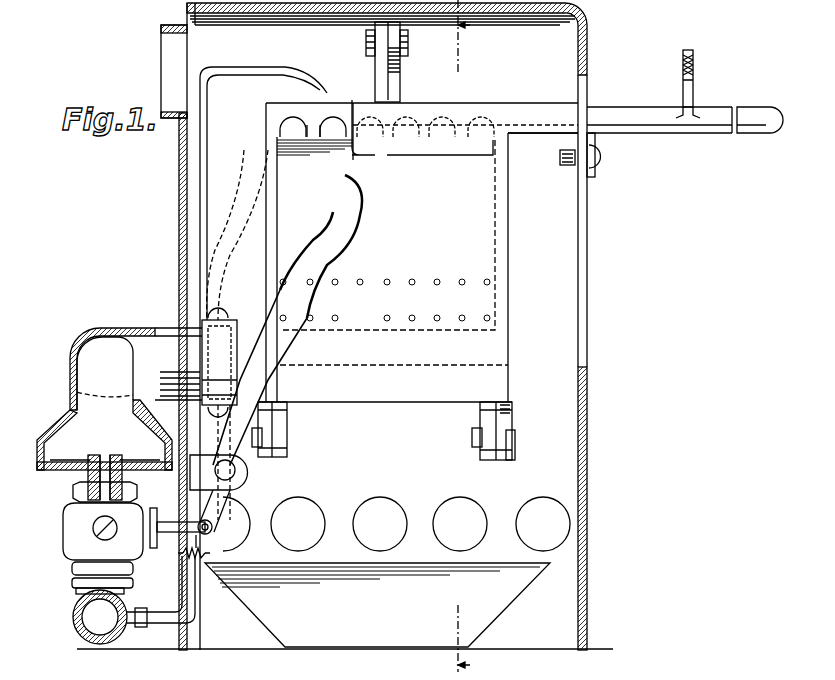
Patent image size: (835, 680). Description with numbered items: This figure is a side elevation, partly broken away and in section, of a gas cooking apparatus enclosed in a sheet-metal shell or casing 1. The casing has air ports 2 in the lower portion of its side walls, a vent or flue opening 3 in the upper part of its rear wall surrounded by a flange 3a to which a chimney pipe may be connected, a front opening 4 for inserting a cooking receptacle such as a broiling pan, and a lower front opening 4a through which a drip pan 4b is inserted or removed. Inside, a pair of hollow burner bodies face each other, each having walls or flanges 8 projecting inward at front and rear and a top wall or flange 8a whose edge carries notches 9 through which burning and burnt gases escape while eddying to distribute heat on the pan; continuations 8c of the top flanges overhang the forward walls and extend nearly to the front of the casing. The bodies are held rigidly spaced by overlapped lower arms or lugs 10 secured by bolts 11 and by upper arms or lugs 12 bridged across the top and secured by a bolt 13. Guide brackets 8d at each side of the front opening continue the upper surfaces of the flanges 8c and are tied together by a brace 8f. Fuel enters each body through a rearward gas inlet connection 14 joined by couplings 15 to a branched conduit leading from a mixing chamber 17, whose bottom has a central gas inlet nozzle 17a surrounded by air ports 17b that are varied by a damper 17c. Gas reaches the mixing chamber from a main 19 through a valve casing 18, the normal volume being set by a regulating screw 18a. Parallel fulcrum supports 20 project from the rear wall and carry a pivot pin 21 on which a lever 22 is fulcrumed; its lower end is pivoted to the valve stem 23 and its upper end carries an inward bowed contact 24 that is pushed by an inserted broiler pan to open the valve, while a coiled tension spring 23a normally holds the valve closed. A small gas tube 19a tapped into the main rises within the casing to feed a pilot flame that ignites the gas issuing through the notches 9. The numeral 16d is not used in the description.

The shell or casing 1 is at (585, 432).
The air ports 2 is at (520, 514).
The vent or flue opening 3 is at (173, 61).
The flange 3a is at (160, 27).
The front opening 4 is at (586, 231).
The drip pan opening 4a is at (583, 592).
The drip pan 4b is at (440, 588).
The walls or flanges 8 is at (501, 218).
The top wall or flange 8a is at (313, 133).
The continuations of top flanges 8c is at (545, 115).
The brackets or guides 8d is at (648, 120).
The brace 8f is at (690, 90).
The notches 9 is at (338, 132).
The lower arms or lugs 10 is at (494, 422).
The bolts 11 is at (478, 443).
The upper arms or lugs 12 is at (384, 92).
The bolt 13 is at (366, 44).
The gas inlet connection 14 is at (252, 338).
The couplings 15 is at (212, 346).
The pipe 16d is at (178, 318).
The mixing chamber 17 is at (80, 424).
The central gas inlet nozzle 17a is at (116, 462).
The air ports 17b is at (75, 452).
The damper 17c is at (38, 470).
The valve casing 18 is at (70, 530).
The regulating screw 18a is at (96, 535).
The gas main 19 is at (78, 633).
The small gas tube 19a is at (160, 626).
The fulcrum supports 20 is at (219, 472).
The pivot or fulcrum pin 21 is at (237, 471).
The lever 22 is at (283, 381).
The valve stem 23 is at (170, 538).
The coiled tension spring 23a is at (201, 566).
The contact 24 is at (360, 208).